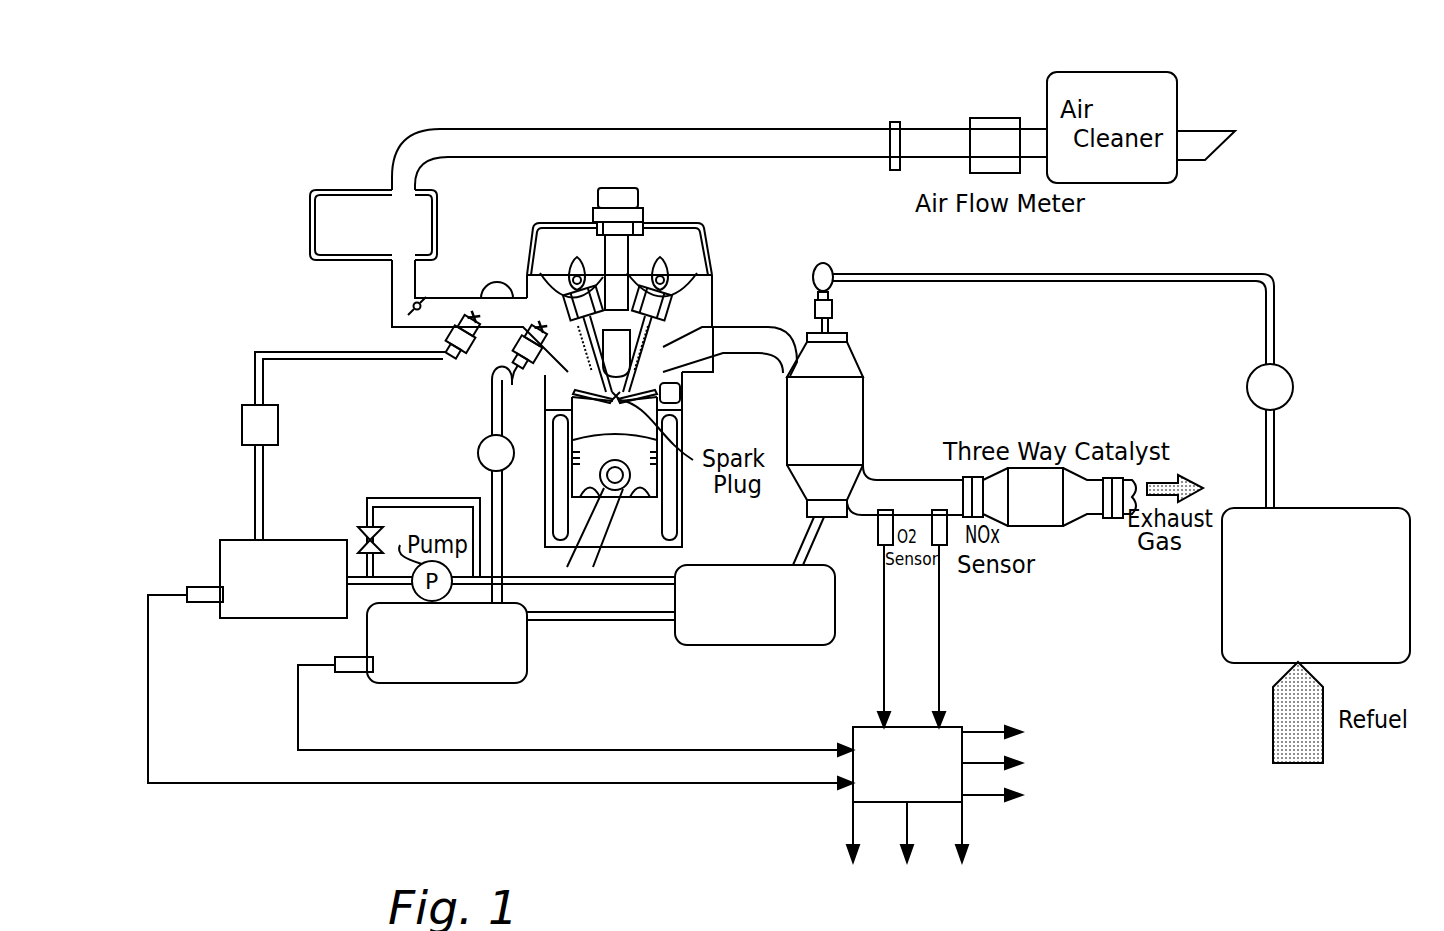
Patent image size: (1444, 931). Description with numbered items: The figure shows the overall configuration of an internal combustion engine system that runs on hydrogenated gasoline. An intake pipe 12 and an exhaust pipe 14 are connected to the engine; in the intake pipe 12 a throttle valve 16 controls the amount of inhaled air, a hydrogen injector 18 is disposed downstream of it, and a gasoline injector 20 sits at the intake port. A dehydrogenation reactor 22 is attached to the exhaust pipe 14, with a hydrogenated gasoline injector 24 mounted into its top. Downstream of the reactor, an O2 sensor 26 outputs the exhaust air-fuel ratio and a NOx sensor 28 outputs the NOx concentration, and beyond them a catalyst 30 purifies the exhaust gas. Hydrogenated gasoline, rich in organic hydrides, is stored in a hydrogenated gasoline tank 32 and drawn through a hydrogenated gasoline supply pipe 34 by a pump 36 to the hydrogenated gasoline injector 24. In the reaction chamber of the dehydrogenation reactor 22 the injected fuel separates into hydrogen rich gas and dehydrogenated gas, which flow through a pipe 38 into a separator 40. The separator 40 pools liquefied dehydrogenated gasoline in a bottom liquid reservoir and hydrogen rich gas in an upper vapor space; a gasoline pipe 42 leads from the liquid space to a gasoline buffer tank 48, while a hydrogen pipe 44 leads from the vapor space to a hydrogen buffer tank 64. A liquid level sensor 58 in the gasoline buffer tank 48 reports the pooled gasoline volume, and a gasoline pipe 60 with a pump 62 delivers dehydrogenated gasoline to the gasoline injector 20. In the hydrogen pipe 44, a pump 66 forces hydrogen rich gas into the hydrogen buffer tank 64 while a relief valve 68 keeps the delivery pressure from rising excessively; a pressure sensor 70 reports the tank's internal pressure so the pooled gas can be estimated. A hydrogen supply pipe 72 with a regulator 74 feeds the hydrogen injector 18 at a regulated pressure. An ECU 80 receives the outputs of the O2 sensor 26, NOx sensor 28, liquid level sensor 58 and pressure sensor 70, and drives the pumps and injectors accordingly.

The intake pipe 12 is at (474, 285).
The exhaust pipe 14 is at (752, 330).
The throttle valve 16 is at (412, 305).
The hydrogen injector 18 is at (441, 366).
The gasoline injector 20 is at (530, 380).
The dehydrogenation reactor 22 is at (855, 405).
The hydrogenated gasoline injector 24 is at (814, 280).
The O2 sensor 26 is at (876, 543).
The NOx sensor 28 is at (942, 548).
The catalyst 30 is at (1040, 527).
The hydrogenated gasoline tank 32 is at (1312, 508).
The hydrogenated gasoline supply pipe 34 is at (1275, 440).
The pump 36 is at (1295, 392).
The pipe 38 is at (795, 548).
The separator 40 is at (750, 646).
The gasoline pipe 42 is at (572, 623).
The hydrogen pipe 44 is at (623, 587).
The gasoline buffer tank 48 is at (447, 683).
The liquid level sensor 58 is at (355, 672).
The gasoline pipe 60 is at (490, 486).
The pump 62 is at (480, 445).
The hydrogen buffer tank 64 is at (215, 542).
The pump 66 is at (385, 529).
The relief valve 68 is at (358, 528).
The pressure sensor 70 is at (213, 602).
The hydrogen supply pipe 72 is at (255, 468).
The regulator 74 is at (242, 418).
The ECU 80 is at (862, 727).